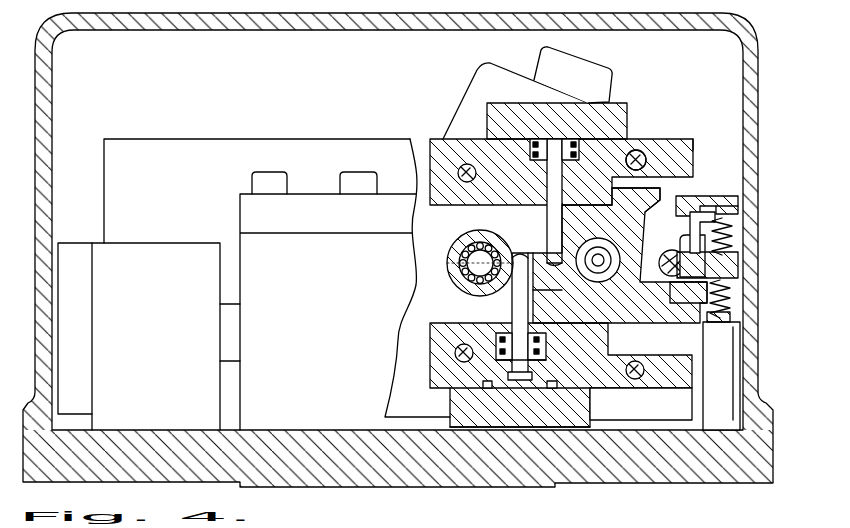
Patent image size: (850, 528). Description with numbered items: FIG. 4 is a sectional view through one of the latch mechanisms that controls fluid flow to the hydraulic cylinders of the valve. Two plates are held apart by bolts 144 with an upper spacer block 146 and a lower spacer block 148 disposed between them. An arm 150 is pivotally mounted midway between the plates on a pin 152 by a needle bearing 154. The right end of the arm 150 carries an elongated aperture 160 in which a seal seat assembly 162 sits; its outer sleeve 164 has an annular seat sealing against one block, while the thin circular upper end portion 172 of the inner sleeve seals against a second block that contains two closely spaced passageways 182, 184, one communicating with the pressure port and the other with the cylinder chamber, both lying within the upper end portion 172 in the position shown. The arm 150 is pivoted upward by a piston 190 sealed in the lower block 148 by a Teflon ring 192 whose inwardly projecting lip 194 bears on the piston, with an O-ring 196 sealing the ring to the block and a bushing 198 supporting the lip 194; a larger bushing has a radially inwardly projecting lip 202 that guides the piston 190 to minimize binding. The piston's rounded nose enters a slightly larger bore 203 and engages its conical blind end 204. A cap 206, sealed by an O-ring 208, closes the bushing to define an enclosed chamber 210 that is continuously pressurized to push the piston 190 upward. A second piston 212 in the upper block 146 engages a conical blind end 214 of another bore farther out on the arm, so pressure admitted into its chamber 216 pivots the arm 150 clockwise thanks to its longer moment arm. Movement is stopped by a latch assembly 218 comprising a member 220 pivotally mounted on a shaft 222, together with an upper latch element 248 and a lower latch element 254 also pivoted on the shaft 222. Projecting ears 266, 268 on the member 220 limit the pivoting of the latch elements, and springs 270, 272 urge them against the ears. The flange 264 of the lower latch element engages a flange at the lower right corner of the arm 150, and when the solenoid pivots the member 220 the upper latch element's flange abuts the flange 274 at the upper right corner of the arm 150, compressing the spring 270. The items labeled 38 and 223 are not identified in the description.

The actuating lever 38 is at (480, 79).
The bolts 144 is at (486, 164).
The upper spacer block 146 is at (436, 150).
The lower spacer block 148 is at (648, 389).
The arm 150 is at (529, 311).
The pin 152 is at (450, 268).
The needle bearing 154 is at (455, 243).
The elongated aperture 160 is at (580, 215).
The seal seat assembly 162 is at (653, 160).
The outer sleeve 164 is at (672, 208).
The upper end portion 172 is at (528, 306).
The passageway 182 is at (562, 305).
The passageway 184 is at (603, 275).
The piston 190 is at (511, 312).
The Teflon ring 192 is at (546, 372).
The inwardly projecting lip 194 is at (546, 334).
The O-ring 196 is at (546, 350).
The bushing 198 is at (497, 335).
The radially inwardly projecting lip 202 is at (534, 412).
The bore 203 is at (454, 284).
The conical blind end 204 is at (482, 238).
The cap 206 is at (473, 432).
The O-ring 208 is at (524, 402).
The enclosed chamber 210 is at (508, 388).
The second piston 212 is at (557, 121).
The conical blind end 214 is at (552, 245).
The chamber 216 is at (554, 150).
The latch assembly 218 is at (700, 187).
The member 220 is at (736, 265).
The shaft 222 is at (642, 255).
The pin 223 is at (646, 327).
The upper latch element 248 is at (722, 200).
The lower latch element 254 is at (718, 340).
The flange 264 is at (670, 324).
The projecting ear 266 is at (738, 203).
The projecting ear 268 is at (735, 306).
The spring 270 is at (690, 230).
The spring 272 is at (688, 295).
The flange 274 is at (700, 143).